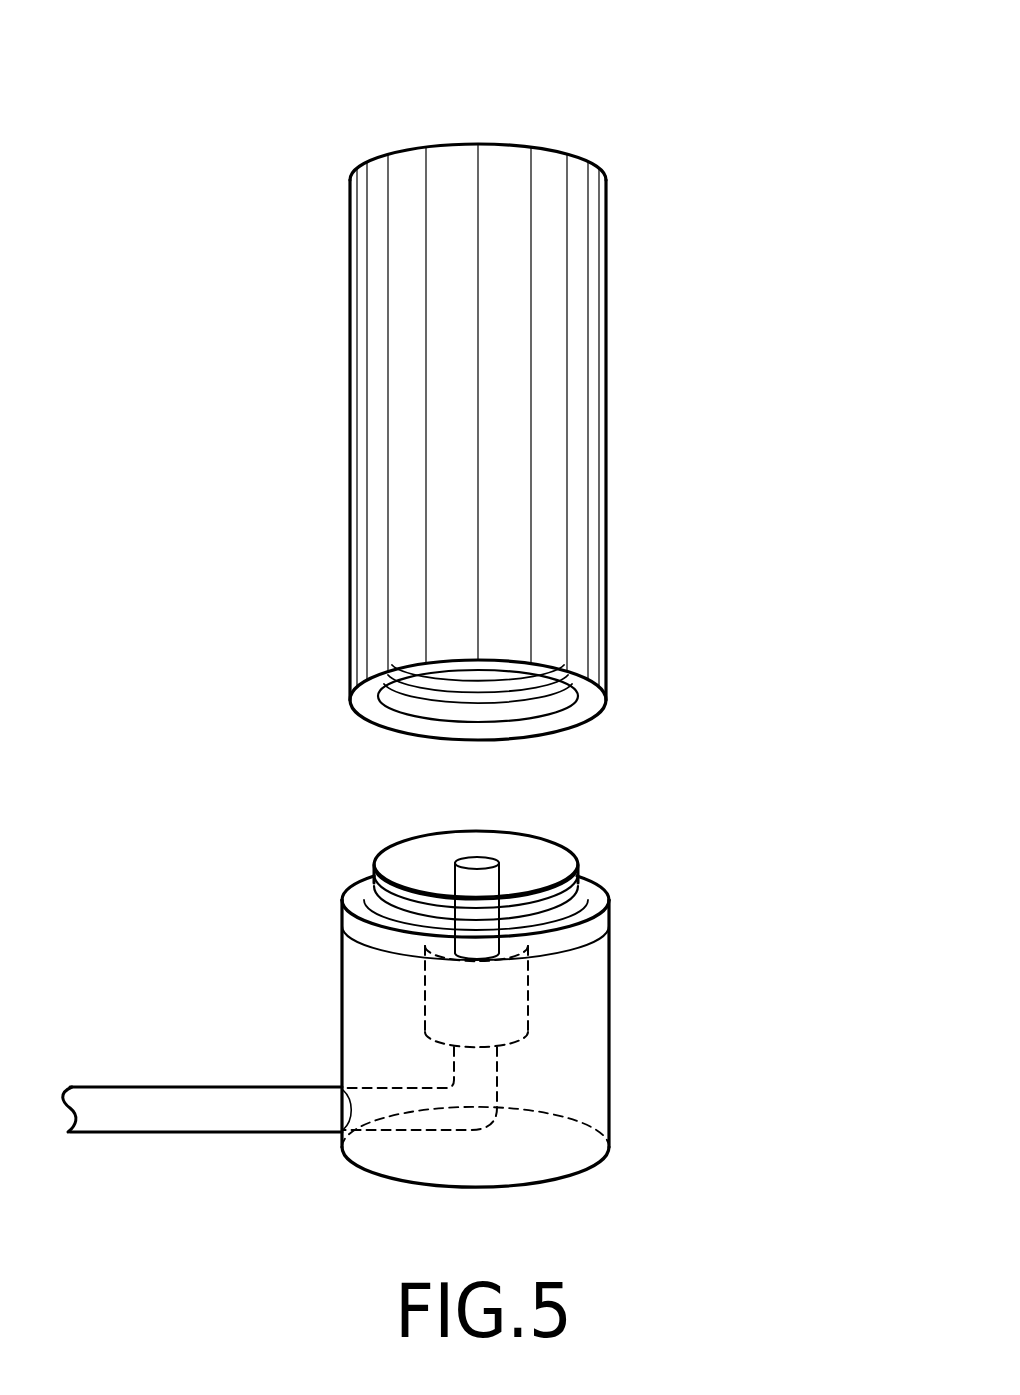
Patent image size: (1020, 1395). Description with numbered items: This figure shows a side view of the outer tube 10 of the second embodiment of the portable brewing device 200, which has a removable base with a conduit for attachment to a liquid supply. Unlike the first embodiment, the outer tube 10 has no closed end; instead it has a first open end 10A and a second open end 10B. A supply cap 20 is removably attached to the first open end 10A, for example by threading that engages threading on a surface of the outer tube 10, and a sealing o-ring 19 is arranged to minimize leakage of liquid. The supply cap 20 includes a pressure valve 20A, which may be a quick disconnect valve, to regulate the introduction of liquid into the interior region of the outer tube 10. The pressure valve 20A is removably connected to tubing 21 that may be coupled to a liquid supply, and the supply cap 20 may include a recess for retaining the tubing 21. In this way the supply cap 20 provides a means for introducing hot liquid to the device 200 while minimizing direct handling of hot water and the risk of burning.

The portable brewing device 200 is at (512, 51).
The outer tube 10 is at (405, 397).
The first open end 10A is at (607, 678).
The second open end 10B is at (607, 198).
The sealing o-ring 19 is at (578, 893).
The supply cap 20 is at (582, 1015).
The pressure valve 20A is at (437, 1006).
The tubing 21 is at (175, 1113).